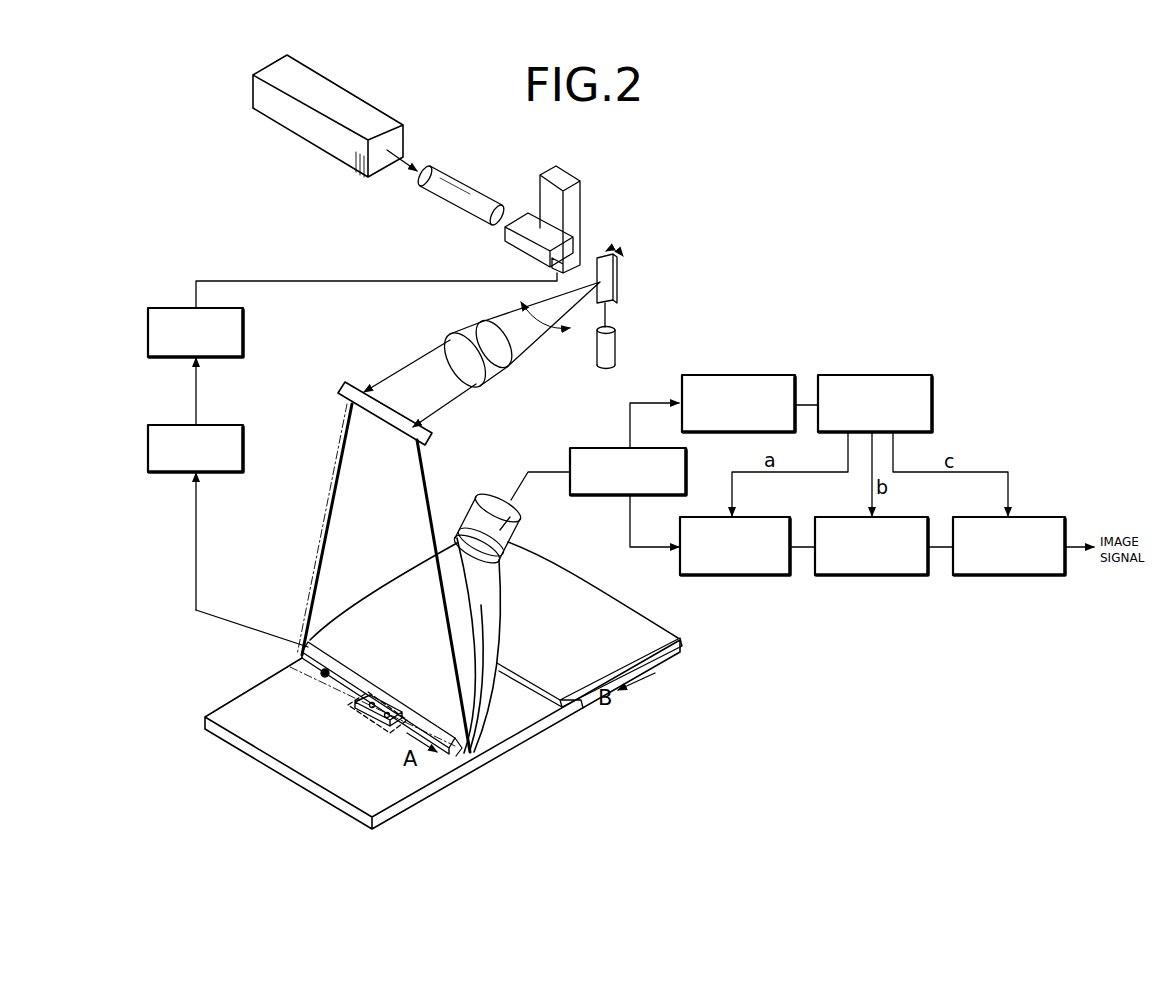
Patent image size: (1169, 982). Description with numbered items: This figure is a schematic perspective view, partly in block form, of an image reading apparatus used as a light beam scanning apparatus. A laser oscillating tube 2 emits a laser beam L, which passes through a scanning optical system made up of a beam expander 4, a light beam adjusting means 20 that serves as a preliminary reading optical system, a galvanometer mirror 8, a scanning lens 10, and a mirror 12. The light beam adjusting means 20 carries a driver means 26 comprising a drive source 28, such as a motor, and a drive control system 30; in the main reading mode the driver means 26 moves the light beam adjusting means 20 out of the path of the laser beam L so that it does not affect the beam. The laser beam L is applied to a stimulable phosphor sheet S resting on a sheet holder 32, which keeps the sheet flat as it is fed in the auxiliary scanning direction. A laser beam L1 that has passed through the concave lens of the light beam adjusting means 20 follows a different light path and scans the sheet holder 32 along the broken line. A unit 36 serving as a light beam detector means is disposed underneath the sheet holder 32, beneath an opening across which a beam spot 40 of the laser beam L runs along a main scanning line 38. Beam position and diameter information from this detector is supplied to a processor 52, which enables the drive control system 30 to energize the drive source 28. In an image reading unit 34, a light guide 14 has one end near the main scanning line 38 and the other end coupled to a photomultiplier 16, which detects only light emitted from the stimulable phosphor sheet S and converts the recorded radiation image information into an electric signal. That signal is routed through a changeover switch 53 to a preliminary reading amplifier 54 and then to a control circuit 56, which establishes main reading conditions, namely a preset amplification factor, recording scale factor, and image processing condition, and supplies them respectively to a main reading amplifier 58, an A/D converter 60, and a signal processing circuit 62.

The laser oscillating tube 2 is at (355, 108).
The laser beam L is at (405, 153).
The beam expander 4 is at (455, 180).
The light beam adjusting means 20 is at (584, 196).
The driver means 26 is at (592, 234).
The drive source 28 is at (563, 180).
The galvanometer mirror 8 is at (612, 282).
The scanning lens 10 is at (503, 347).
The mirror 12 is at (345, 381).
The laser beam L1 is at (318, 578).
The sheet holder 32 is at (410, 782).
The image reading unit 34 is at (292, 646).
The unit 36 is at (357, 721).
The main scanning line 38 is at (452, 753).
The beam spot 40 is at (322, 676).
The stimulable phosphor sheet S is at (650, 632).
The photomultiplier 16 is at (491, 505).
The light guide 14 is at (484, 604).
The changeover switch 53 is at (610, 497).
The preliminary reading amplifier 54 is at (742, 375).
The control circuit 56 is at (862, 375).
The main reading amplifier 58 is at (758, 576).
The A/D converter 60 is at (885, 576).
The signal processing circuit 62 is at (1008, 576).
The drive control system 30 is at (148, 323).
The processor 52 is at (148, 445).